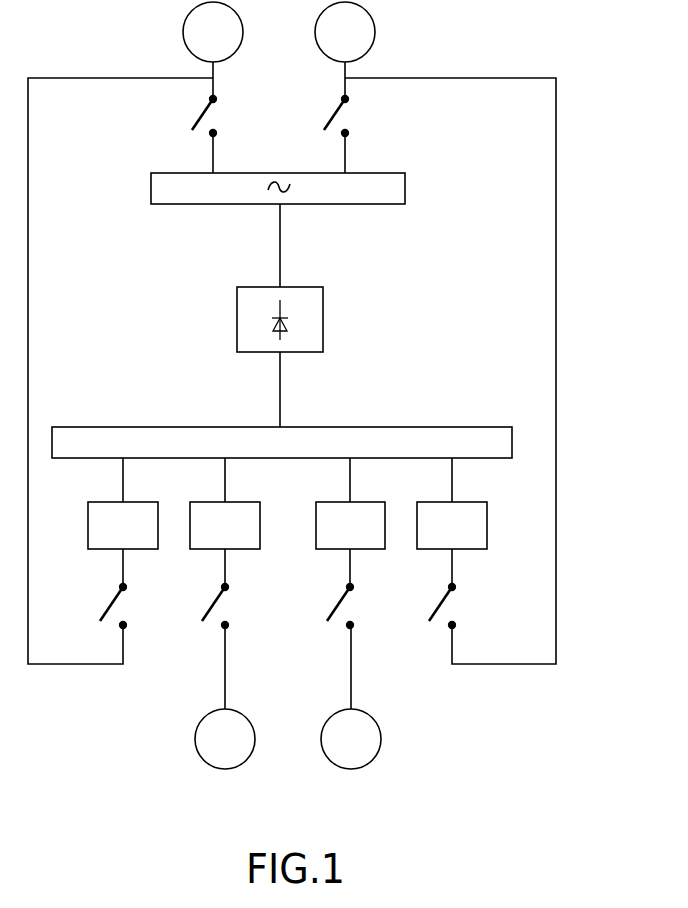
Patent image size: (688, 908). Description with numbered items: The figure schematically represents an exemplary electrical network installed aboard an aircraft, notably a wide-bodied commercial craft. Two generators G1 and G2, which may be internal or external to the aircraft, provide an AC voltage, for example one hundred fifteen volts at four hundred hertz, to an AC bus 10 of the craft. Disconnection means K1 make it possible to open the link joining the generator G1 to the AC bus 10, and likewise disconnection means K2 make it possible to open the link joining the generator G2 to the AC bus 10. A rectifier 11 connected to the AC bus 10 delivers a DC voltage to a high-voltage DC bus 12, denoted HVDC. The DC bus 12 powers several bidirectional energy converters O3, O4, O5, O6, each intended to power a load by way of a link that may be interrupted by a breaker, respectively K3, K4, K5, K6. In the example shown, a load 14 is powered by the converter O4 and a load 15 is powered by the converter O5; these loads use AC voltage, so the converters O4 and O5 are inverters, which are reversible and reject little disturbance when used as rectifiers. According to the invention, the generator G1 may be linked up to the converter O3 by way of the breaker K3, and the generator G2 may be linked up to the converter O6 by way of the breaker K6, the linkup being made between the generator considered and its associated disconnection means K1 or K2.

The AC bus 10 is at (405, 186).
The rectifier 11 is at (323, 322).
The high-voltage DC bus 12 is at (387, 427).
The load 14 is at (225, 739).
The load 15 is at (351, 739).
The generator G1 is at (213, 32).
The generator G2 is at (345, 32).
The disconnection means K1 is at (225, 116).
The disconnection means K2 is at (356, 116).
The breaker K3 is at (128, 606).
The breaker K4 is at (232, 606).
The breaker K5 is at (358, 606).
The breaker K6 is at (459, 606).
The energy converter O3 is at (123, 525).
The energy converter O4 is at (225, 525).
The energy converter O5 is at (350, 525).
The energy converter O6 is at (452, 525).